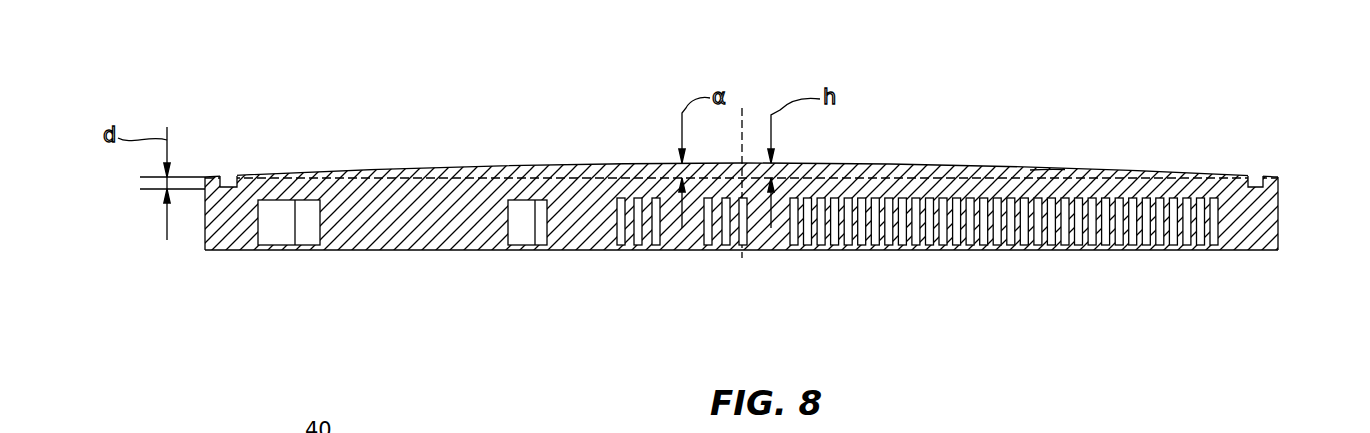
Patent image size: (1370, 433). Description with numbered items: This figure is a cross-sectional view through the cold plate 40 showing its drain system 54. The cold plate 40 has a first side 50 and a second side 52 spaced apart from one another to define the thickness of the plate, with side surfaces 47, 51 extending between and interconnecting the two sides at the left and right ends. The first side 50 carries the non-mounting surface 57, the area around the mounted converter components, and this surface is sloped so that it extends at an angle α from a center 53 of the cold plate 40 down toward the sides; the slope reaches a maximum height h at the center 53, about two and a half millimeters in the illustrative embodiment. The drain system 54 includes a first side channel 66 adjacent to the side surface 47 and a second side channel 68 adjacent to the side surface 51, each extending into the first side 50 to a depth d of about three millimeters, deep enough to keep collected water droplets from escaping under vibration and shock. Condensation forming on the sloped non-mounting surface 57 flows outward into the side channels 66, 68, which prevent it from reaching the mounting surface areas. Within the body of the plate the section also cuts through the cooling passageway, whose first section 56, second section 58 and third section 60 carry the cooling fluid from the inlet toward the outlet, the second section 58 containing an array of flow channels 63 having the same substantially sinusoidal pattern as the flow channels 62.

The cold plate 40 is at (719, 186).
The side surface 47 is at (1278, 210).
The first side 50 is at (955, 170).
The side surface 51 is at (205, 238).
The second side 52 is at (417, 250).
The center 53 is at (745, 118).
The drain system 54 is at (746, 198).
The first section 56 is at (1047, 190).
The non-mounting surface 57 is at (1015, 168).
The second section 58 is at (637, 259).
The third section 60 is at (523, 192).
The flow channels 62 is at (935, 243).
The flow channels 63 is at (717, 243).
The first side channel 66 is at (1248, 177).
The second side channel 68 is at (240, 165).